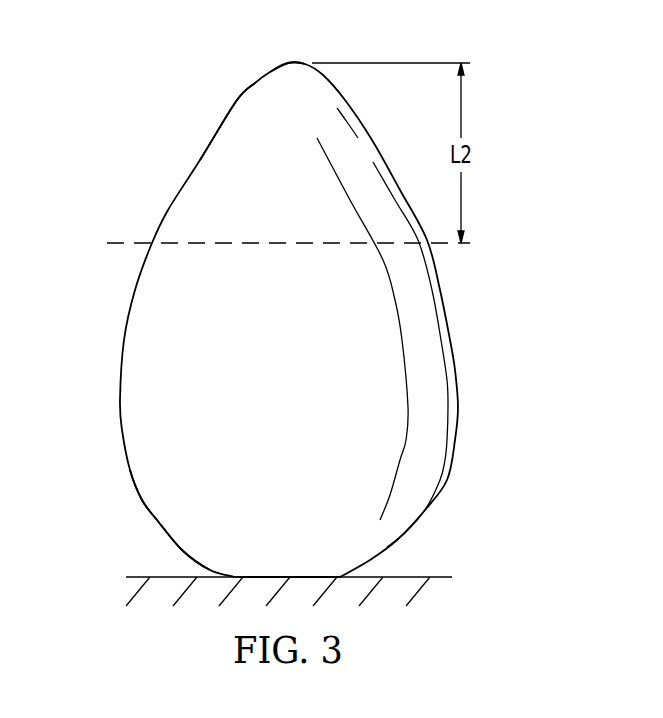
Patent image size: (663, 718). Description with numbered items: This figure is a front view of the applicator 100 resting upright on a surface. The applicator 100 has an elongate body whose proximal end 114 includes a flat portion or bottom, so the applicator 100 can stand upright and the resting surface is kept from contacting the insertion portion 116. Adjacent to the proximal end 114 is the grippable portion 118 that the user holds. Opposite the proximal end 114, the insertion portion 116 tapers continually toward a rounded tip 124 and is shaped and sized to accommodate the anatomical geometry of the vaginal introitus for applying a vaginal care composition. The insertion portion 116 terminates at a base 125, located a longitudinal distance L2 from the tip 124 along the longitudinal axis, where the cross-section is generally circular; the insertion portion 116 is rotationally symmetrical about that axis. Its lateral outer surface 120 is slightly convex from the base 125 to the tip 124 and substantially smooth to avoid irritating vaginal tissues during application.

The applicator 100 is at (130, 99).
The proximal end 114 is at (450, 486).
The insertion portion 116 is at (243, 124).
The grippable portion 118 is at (172, 498).
The lateral outer surface 120 is at (362, 168).
The tip 124 is at (277, 72).
The base 125 is at (247, 236).